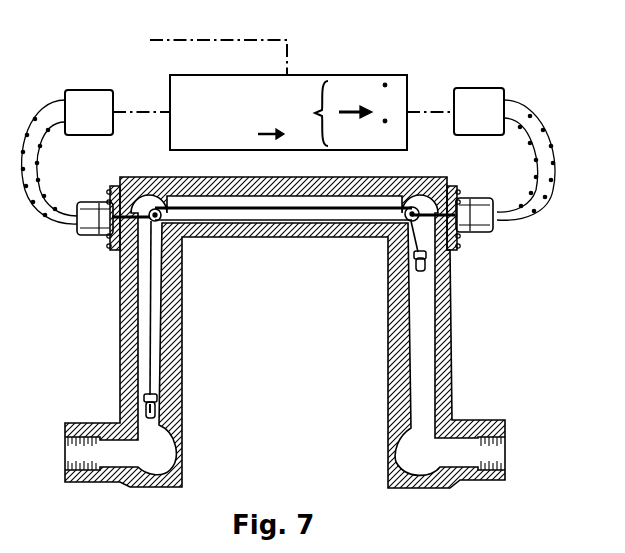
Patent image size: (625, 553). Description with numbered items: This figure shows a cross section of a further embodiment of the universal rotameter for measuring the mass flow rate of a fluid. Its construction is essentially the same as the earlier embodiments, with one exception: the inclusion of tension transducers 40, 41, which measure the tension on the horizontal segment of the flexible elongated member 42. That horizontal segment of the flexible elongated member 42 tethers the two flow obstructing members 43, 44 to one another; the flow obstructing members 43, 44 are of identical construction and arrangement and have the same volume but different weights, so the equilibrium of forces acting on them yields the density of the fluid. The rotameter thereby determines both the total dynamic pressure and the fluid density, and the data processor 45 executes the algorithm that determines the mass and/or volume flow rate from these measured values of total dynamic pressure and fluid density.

The tension transducer 40 is at (98, 222).
The tension transducer 41 is at (484, 233).
The flexible elongated member 42 is at (288, 211).
The flow obstructing member 43 is at (140, 412).
The flow obstructing member 44 is at (452, 268).
The data processor 45 is at (362, 75).